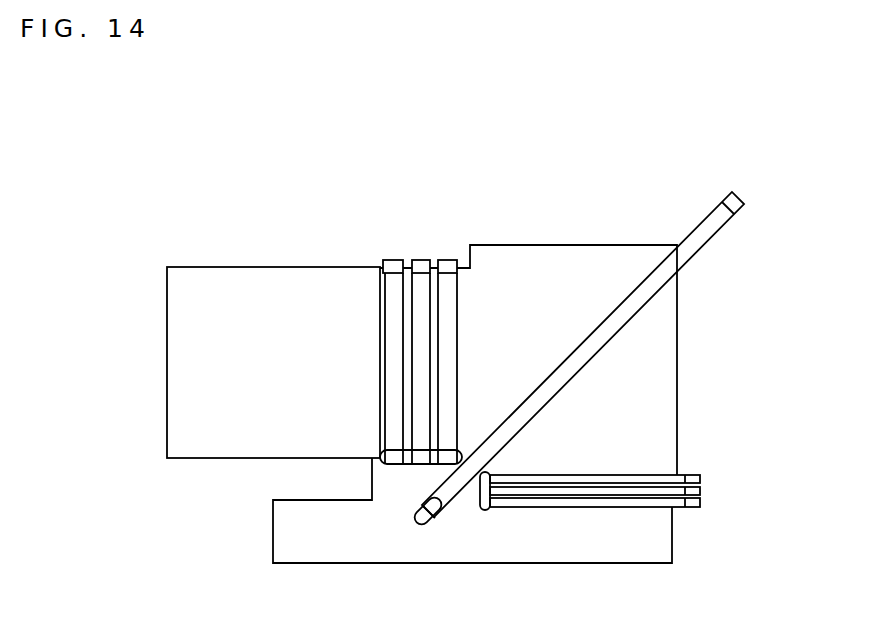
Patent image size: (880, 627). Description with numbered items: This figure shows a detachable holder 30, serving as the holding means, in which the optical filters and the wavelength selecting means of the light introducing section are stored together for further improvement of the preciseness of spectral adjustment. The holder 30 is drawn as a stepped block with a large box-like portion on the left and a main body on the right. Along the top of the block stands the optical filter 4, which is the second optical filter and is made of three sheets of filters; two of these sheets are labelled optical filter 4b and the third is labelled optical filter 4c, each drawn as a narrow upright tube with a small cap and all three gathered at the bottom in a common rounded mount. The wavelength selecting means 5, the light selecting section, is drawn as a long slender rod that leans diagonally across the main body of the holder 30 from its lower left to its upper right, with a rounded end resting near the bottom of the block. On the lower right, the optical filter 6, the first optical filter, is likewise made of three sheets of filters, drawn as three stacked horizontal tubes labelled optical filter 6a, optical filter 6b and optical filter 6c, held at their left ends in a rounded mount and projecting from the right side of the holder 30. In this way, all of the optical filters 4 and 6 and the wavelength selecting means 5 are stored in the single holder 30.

The optical filter 4 is at (421, 315).
The optical filter 4b is at (393, 260).
The optical filter 4c is at (453, 337).
The wavelength selecting means 5 is at (745, 197).
The optical filter 6 is at (634, 491).
The optical filter 6a is at (700, 479).
The optical filter 6b is at (700, 491).
The optical filter 6c is at (621, 514).
The holder 30 is at (677, 372).